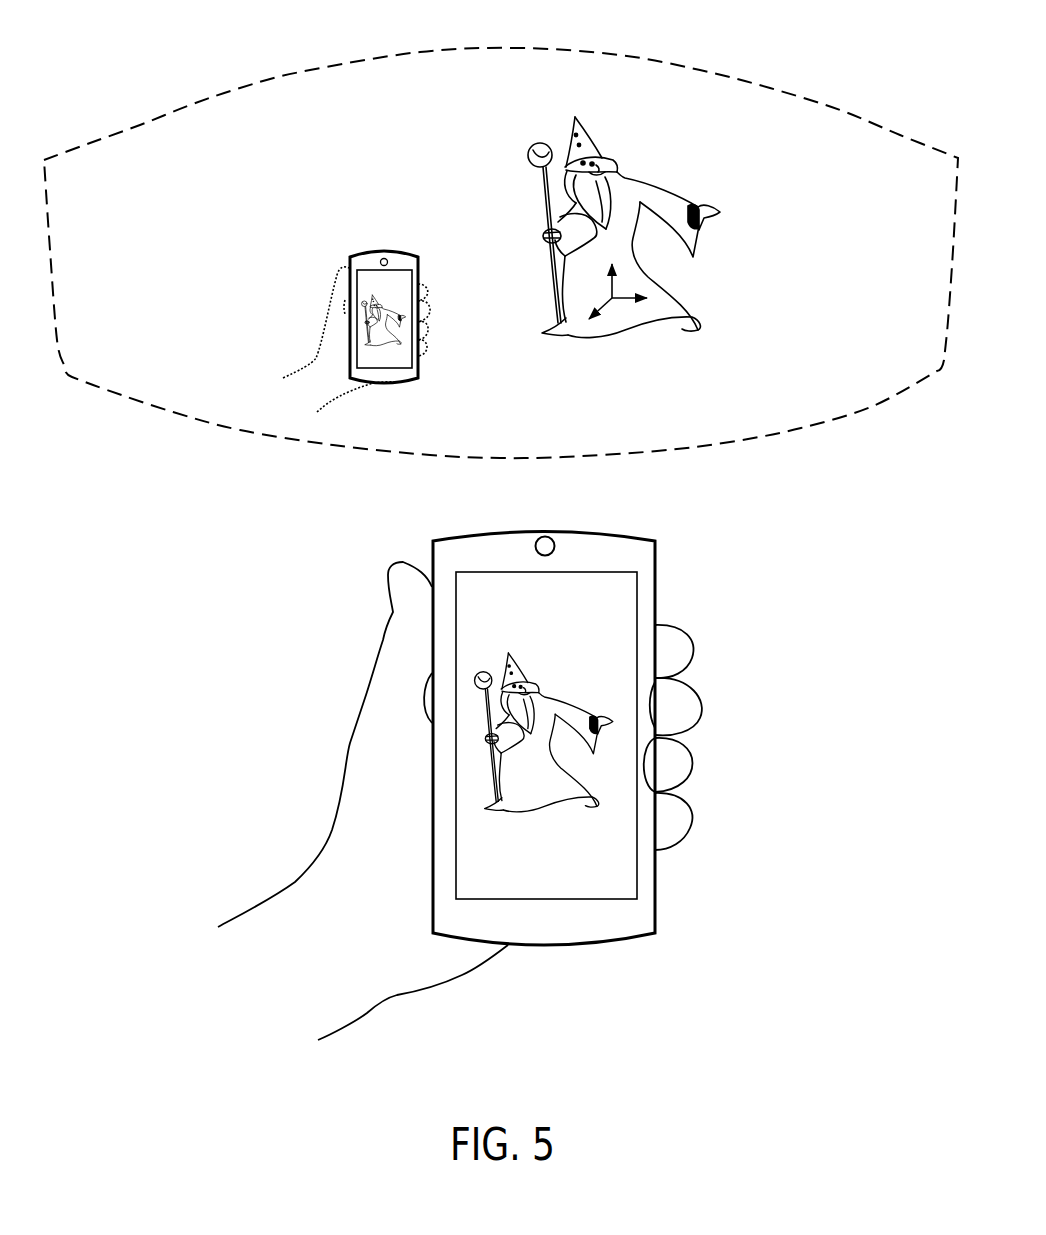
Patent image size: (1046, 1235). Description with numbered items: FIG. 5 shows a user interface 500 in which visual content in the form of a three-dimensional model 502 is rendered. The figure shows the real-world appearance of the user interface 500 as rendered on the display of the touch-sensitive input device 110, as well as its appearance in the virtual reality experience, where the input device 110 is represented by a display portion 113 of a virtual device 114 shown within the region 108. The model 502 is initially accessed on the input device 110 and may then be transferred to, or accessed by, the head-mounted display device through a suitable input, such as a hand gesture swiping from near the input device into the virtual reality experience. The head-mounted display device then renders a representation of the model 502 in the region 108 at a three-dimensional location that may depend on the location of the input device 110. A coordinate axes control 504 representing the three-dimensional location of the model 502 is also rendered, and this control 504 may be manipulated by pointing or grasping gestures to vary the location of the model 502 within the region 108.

The region 108 is at (510, 52).
The touch-sensitive input device 110 is at (690, 571).
The display portion 113 is at (402, 370).
The image of mobile device 114 is at (422, 278).
The user interface 500 is at (587, 554).
The 3D model 502 is at (638, 159).
The coordinate axes control 504 is at (611, 321).